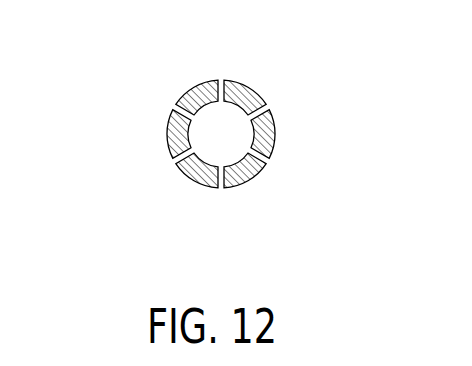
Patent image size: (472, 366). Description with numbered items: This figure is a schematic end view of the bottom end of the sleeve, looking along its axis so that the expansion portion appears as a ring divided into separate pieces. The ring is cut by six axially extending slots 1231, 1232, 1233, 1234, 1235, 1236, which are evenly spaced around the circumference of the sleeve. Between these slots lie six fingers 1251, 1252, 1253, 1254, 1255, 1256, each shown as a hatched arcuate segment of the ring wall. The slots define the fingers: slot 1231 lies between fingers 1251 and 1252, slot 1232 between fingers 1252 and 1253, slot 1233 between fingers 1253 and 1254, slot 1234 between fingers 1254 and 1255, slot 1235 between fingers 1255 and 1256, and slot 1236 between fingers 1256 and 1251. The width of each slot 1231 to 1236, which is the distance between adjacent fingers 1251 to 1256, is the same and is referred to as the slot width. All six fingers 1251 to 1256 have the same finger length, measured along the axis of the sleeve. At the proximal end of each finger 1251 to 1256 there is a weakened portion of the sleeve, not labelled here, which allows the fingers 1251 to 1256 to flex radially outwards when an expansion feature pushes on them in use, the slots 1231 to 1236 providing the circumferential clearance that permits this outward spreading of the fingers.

The finger 1251 is at (251, 94).
The finger 1252 is at (278, 131).
The finger 1253 is at (247, 187).
The finger 1254 is at (190, 187).
The finger 1255 is at (170, 144).
The finger 1256 is at (196, 90).
The axially extending slot 1231 is at (272, 108).
The axially extending slot 1232 is at (269, 163).
The axially extending slot 1233 is at (222, 189).
The axially extending slot 1234 is at (173, 159).
The axially extending slot 1235 is at (172, 108).
The axially extending slot 1236 is at (221, 80).